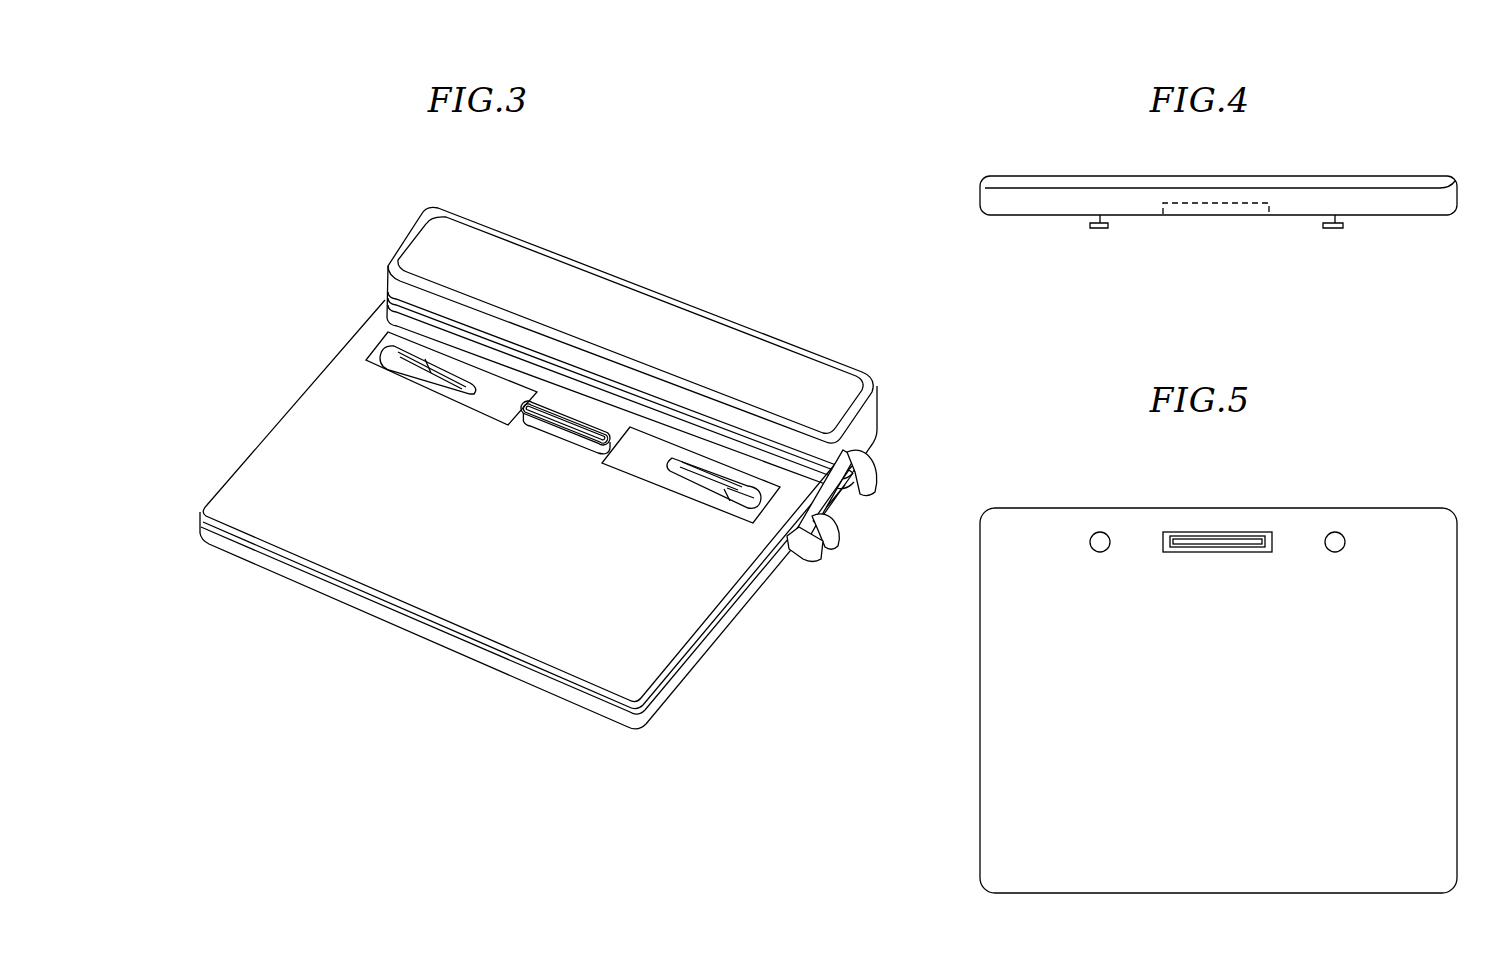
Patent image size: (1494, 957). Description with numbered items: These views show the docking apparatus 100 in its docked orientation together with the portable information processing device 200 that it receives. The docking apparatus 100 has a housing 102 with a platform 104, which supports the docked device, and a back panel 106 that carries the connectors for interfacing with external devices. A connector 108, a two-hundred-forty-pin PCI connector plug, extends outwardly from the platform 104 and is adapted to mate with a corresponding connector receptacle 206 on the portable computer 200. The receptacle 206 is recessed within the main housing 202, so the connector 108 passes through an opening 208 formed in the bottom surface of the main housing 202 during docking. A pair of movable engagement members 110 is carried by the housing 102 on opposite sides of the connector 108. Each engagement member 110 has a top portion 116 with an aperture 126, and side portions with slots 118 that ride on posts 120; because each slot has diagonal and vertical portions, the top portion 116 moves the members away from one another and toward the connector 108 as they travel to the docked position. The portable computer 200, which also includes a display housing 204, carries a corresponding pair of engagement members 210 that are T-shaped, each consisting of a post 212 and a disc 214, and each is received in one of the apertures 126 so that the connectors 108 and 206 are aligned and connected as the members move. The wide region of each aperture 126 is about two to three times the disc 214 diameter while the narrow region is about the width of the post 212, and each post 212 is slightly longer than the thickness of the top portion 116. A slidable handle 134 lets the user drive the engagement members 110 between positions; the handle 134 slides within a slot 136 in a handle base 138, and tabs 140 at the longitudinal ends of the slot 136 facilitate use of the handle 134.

In FIG. 3, the docking apparatus 100 is at (610, 236).
In FIG. 3, the housing 102 is at (706, 296).
In FIG. 3, the platform 104 is at (248, 476).
In FIG. 3, the back panel 106 is at (423, 245).
In FIG. 3, the connector 108 is at (565, 432).
In FIG. 3, the engagement members 110 is at (358, 380).
In FIG. 3, the top portion 116 is at (497, 407).
In FIG. 3, the slots 118 is at (685, 482).
In FIG. 3, the posts 120 is at (728, 492).
In FIG. 3, the aperture 126 is at (405, 372).
In FIG. 3, the handle 134 is at (840, 540).
In FIG. 3, the slot 136 is at (836, 498).
In FIG. 3, the handle base 138 is at (792, 545).
In FIG. 3, the tabs 140 is at (878, 484).
In FIG. 4, the portable information processing device 200 is at (1336, 150).
In FIG. 5, the portable information processing device 200 is at (1003, 763).
In FIG. 4, the main housing 202 is at (1444, 203).
In FIG. 5, the main housing 202 is at (1013, 683).
In FIG. 4, the display housing 204 is at (1448, 182).
In FIG. 5, the connector receptacle 206 is at (1195, 543).
In FIG. 5, the opening 208 is at (1248, 552).
In FIG. 4, the engagement members 210 is at (1326, 258).
In FIG. 5, the engagement members 210 is at (1336, 530).
In FIG. 4, the post 212 is at (1325, 217).
In FIG. 4, the disc 214 is at (1322, 237).